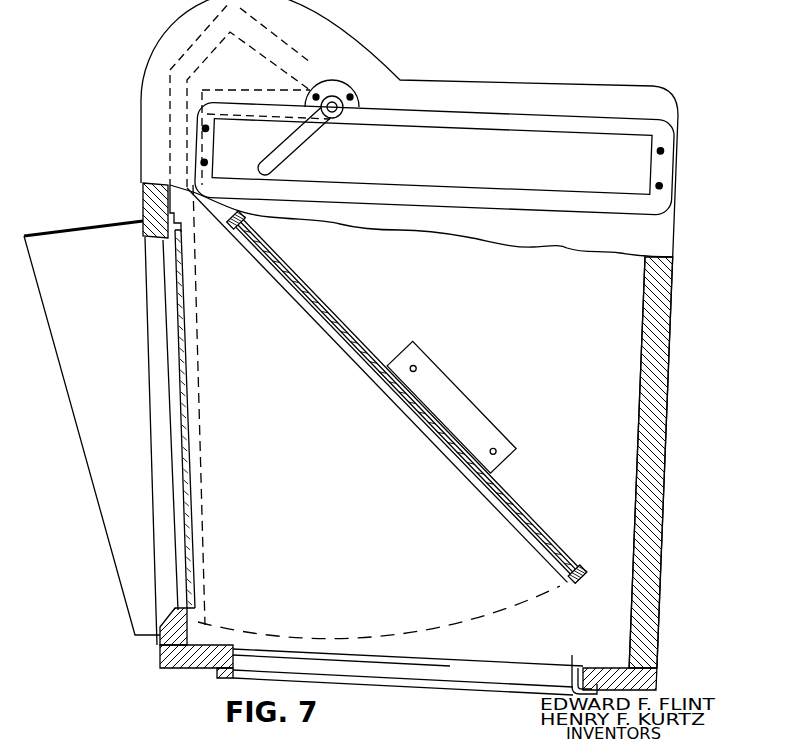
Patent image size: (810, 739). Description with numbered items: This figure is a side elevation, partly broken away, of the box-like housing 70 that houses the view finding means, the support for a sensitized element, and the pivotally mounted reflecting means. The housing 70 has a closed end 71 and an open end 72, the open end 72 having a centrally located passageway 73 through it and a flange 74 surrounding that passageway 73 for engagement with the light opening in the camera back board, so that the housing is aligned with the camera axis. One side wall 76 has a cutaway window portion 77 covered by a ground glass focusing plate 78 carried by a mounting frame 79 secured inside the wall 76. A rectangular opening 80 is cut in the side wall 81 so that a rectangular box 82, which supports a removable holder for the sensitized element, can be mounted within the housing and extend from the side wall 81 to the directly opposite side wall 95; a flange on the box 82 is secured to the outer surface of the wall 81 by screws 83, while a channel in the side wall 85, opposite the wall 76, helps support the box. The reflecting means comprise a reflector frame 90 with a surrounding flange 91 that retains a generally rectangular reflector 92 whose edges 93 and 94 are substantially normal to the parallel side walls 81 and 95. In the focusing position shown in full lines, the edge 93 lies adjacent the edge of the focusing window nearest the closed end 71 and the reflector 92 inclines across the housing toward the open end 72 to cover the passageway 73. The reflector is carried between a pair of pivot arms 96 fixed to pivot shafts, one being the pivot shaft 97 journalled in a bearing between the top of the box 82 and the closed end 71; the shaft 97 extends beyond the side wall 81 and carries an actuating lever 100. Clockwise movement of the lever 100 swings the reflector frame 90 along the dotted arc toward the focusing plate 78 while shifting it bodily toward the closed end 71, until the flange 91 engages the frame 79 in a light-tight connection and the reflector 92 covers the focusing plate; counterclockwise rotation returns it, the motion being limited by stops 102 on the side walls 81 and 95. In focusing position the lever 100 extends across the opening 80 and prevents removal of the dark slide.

The housing 70 is at (668, 490).
The closed end 71 is at (457, 80).
The open end 72 is at (180, 660).
The passageway 73 is at (418, 670).
The flange 74 is at (573, 668).
The side wall 76 is at (160, 635).
The window portion 77 is at (157, 438).
The ground glass focusing plate 78 is at (180, 412).
The mounting frame 79 is at (182, 237).
The rectangular opening 80 is at (597, 155).
The side wall 81 is at (655, 235).
The rectangular box 82 is at (513, 128).
The screws 83 is at (666, 148).
The side wall 85 is at (657, 367).
The reflector frame 90 is at (330, 314).
The surrounding flange 91 is at (577, 583).
The reflector 92 is at (313, 307).
The reflector edge 93 is at (247, 233).
The reflector edge 94 is at (575, 562).
The side wall 95 is at (598, 313).
The pivot arms 96 is at (210, 90).
The pivot shaft 97 is at (332, 96).
The actuating lever 100 is at (298, 137).
The stops 102 is at (452, 392).